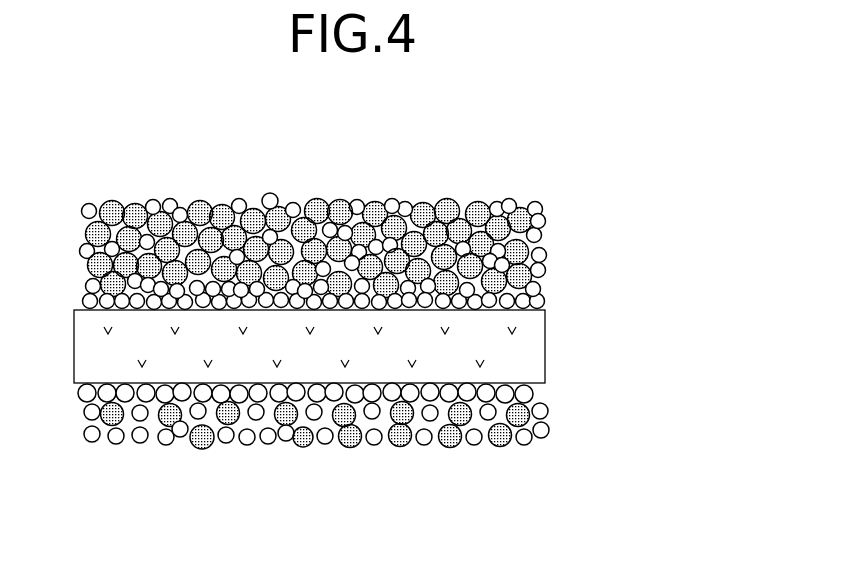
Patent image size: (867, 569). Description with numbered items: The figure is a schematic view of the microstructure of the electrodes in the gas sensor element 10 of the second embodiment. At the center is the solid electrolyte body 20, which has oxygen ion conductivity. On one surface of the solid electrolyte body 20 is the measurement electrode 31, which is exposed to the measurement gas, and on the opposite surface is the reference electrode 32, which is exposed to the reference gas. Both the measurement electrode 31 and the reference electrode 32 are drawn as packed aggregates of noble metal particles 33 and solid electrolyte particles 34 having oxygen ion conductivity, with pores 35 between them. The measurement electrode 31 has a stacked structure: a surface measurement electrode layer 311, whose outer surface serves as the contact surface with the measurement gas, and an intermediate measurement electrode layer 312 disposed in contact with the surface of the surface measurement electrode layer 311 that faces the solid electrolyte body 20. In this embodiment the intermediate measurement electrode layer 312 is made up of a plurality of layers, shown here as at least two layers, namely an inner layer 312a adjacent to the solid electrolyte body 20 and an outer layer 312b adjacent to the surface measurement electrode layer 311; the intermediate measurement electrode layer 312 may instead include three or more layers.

The gas sensor element 10 is at (102, 162).
The solid electrolyte body 20 is at (518, 347).
The measurement electrode 31 is at (727, 208).
The surface measurement electrode layer 311 is at (552, 192).
The intermediate measurement electrode layer 312 is at (404, 280).
The inner layer 312a is at (552, 289).
The outer layer 312b is at (552, 258).
The reference electrode 32 is at (551, 388).
The noble metal particles 33 is at (273, 198).
The solid electrolyte particles 34 is at (341, 205).
The pores 35 is at (199, 201).